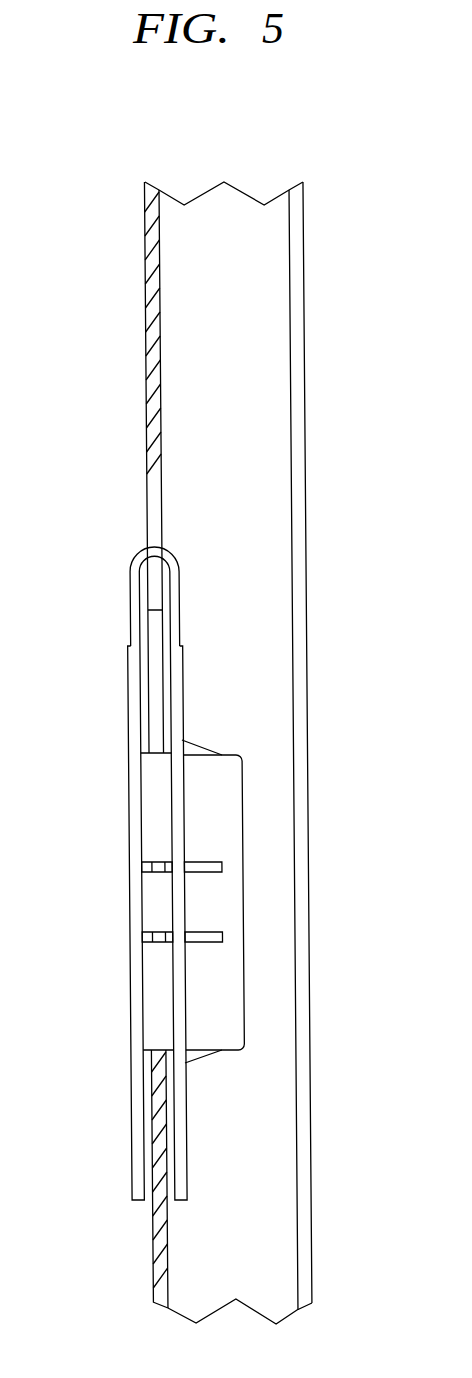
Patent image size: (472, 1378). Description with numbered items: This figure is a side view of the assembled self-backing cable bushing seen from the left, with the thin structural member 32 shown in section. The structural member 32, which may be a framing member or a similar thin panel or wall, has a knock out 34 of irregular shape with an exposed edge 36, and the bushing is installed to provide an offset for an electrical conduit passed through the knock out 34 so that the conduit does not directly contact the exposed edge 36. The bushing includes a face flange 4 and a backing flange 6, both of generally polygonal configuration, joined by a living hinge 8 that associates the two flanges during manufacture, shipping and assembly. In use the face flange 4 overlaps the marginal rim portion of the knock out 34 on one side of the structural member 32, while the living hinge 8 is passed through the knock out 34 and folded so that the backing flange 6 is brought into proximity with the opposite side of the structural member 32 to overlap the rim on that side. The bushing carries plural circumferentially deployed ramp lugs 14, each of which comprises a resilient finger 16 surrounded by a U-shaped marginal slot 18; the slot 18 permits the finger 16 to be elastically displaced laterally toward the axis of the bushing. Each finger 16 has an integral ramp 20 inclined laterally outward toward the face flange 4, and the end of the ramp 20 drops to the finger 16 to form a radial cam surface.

The thin structural member 32 is at (145, 332).
The knock out 34 is at (155, 530).
The exposed edge 36 is at (148, 470).
The living hinge 8 is at (140, 555).
The face flange 4 is at (128, 698).
The backing flange 6 is at (183, 678).
The resilient finger 16 is at (225, 902).
The ramp lug 14 is at (203, 903).
The U-shaped marginal slot 18 is at (202, 937).
The ramp 20 is at (203, 748).